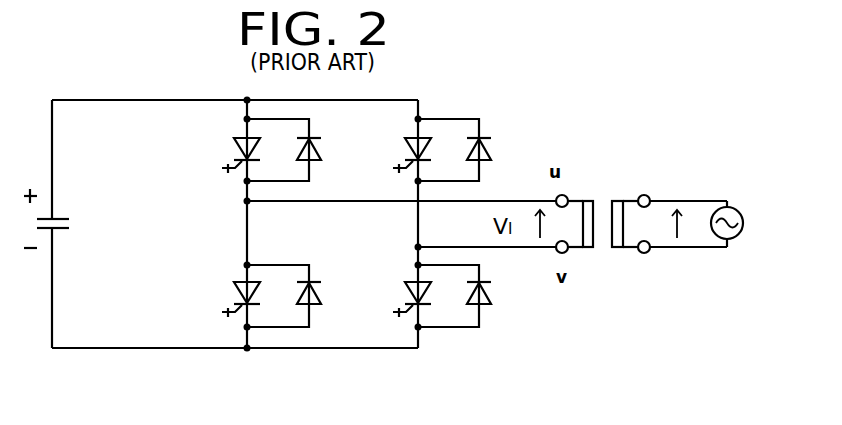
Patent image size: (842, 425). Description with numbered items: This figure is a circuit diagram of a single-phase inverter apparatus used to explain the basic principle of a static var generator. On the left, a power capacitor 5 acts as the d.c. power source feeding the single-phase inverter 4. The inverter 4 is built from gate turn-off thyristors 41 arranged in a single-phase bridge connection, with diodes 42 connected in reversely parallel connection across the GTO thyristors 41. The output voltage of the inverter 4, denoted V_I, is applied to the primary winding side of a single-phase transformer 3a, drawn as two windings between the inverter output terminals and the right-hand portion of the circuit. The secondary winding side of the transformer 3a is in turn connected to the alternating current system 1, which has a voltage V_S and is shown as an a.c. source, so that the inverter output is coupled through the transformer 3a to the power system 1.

The alternating current system 1 is at (741, 208).
The single-phase transformer 3a is at (603, 197).
The single-phase inverter 4 is at (304, 224).
The power capacitor 5 is at (73, 220).
The gate turn-off thyristor 41 is at (232, 133).
The diode 42 is at (323, 148).